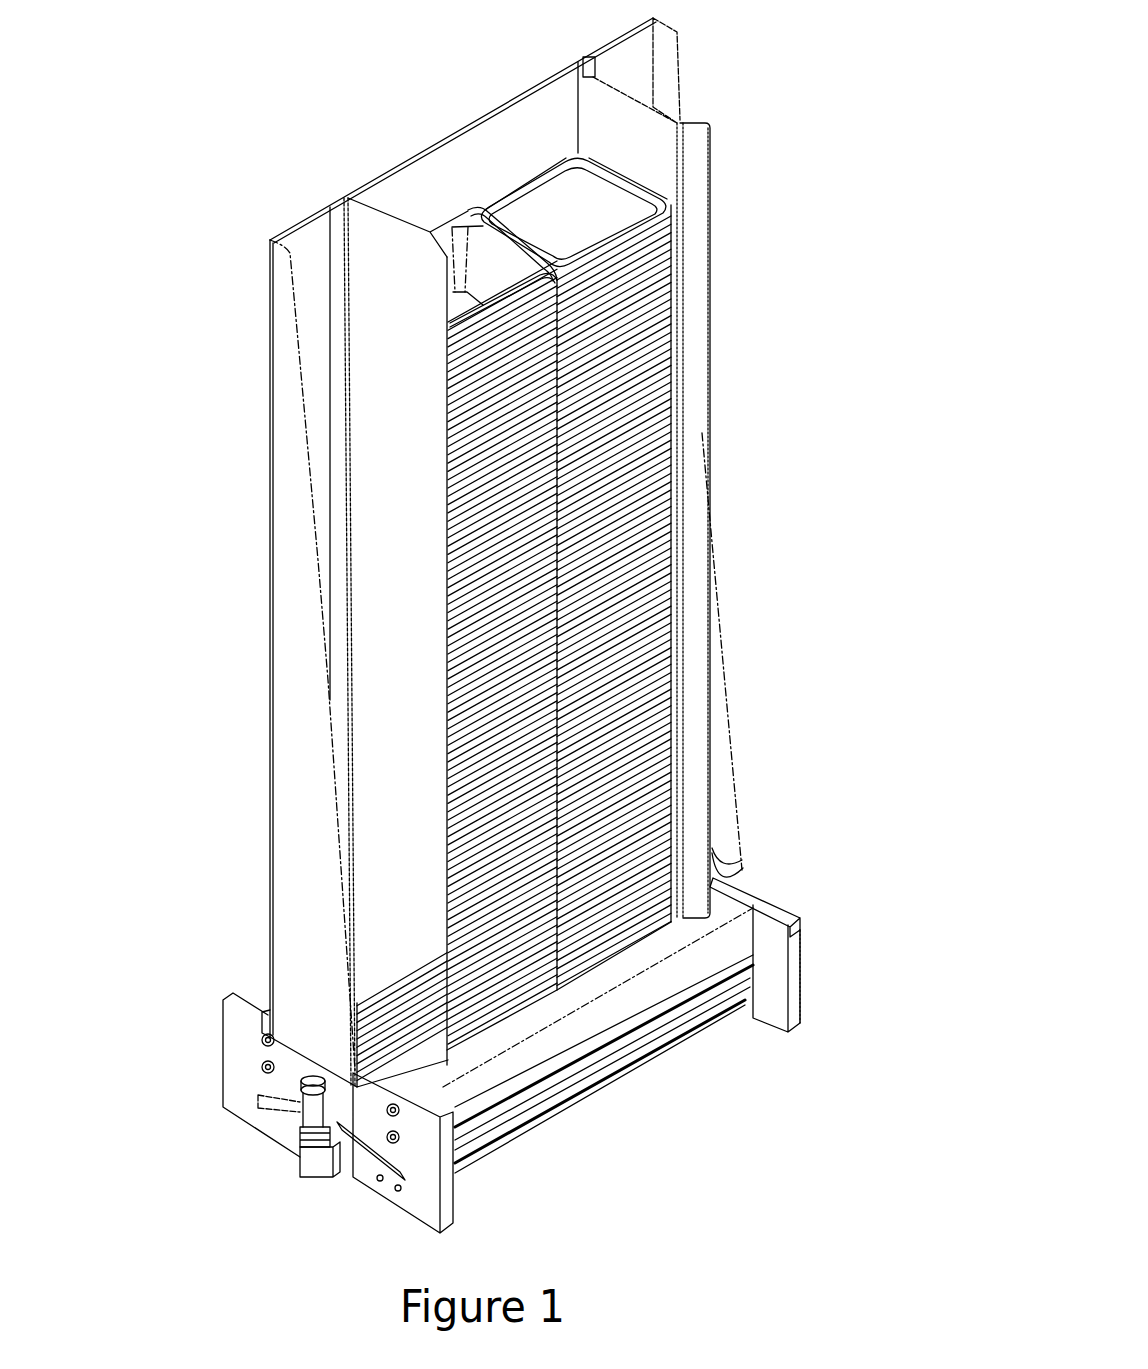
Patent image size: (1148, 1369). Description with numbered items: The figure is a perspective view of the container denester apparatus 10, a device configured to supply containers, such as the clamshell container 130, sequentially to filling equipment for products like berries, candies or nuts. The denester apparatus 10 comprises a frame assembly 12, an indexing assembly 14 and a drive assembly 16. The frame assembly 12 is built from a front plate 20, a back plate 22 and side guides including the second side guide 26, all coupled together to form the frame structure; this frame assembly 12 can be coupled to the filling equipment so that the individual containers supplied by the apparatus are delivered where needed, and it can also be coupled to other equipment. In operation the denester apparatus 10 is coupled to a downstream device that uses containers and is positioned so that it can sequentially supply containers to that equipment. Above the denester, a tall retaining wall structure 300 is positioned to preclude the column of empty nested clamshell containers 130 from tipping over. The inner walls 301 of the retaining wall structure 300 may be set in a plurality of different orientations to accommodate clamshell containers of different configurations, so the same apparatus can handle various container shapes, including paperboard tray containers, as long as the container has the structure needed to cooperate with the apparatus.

The denester apparatus 10 is at (790, 606).
The frame assembly 12 is at (770, 888).
The indexing assembly 14 is at (596, 1104).
The drive assembly 16 is at (295, 1153).
The front plate 20 is at (225, 1057).
The back plate 22 is at (810, 948).
The second side guide 26 is at (722, 975).
The clamshell container 130 is at (612, 216).
The retaining wall structure 300 is at (262, 465).
The inner walls 301 is at (372, 249).